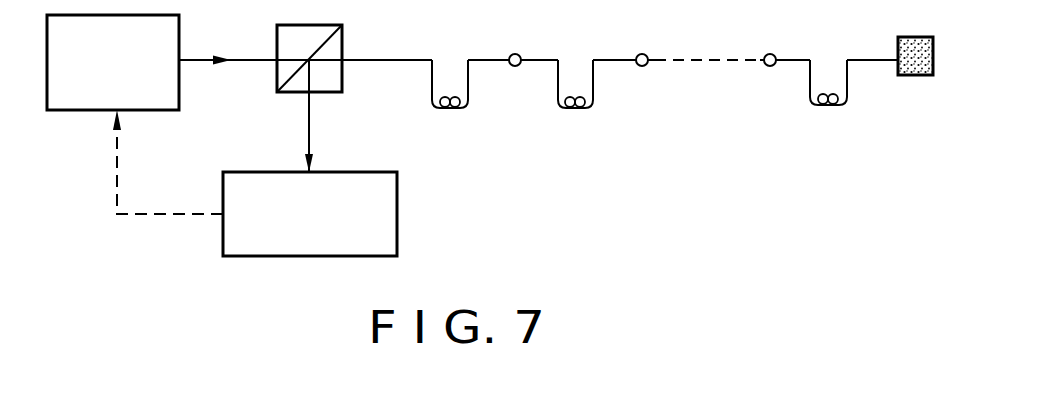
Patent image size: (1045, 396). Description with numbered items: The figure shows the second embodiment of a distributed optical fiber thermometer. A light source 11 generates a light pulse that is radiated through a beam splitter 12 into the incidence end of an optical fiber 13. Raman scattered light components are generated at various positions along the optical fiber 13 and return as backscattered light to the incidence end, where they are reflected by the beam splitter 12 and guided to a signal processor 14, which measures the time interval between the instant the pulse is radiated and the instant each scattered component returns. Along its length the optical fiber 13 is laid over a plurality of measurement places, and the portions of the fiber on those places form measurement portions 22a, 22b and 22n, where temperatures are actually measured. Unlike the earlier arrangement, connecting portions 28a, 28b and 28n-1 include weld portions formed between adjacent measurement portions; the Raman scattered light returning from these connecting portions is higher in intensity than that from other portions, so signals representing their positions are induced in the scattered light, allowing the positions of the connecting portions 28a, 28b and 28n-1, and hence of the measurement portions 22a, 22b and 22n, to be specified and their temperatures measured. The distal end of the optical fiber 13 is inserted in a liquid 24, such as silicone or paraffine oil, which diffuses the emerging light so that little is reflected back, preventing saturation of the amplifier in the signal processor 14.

The light source 11 is at (179, 31).
The beam splitter 12 is at (342, 31).
The optical fiber 13 is at (378, 61).
The signal processor 14 is at (397, 215).
The measurement portion 22a is at (450, 91).
The measurement portion 22b is at (573, 91).
The measurement portion 22n is at (827, 90).
The connecting portion 28a is at (515, 66).
The connecting portion 28b is at (642, 66).
The connecting portion 28n-1 is at (770, 66).
The liquid 24 is at (915, 75).